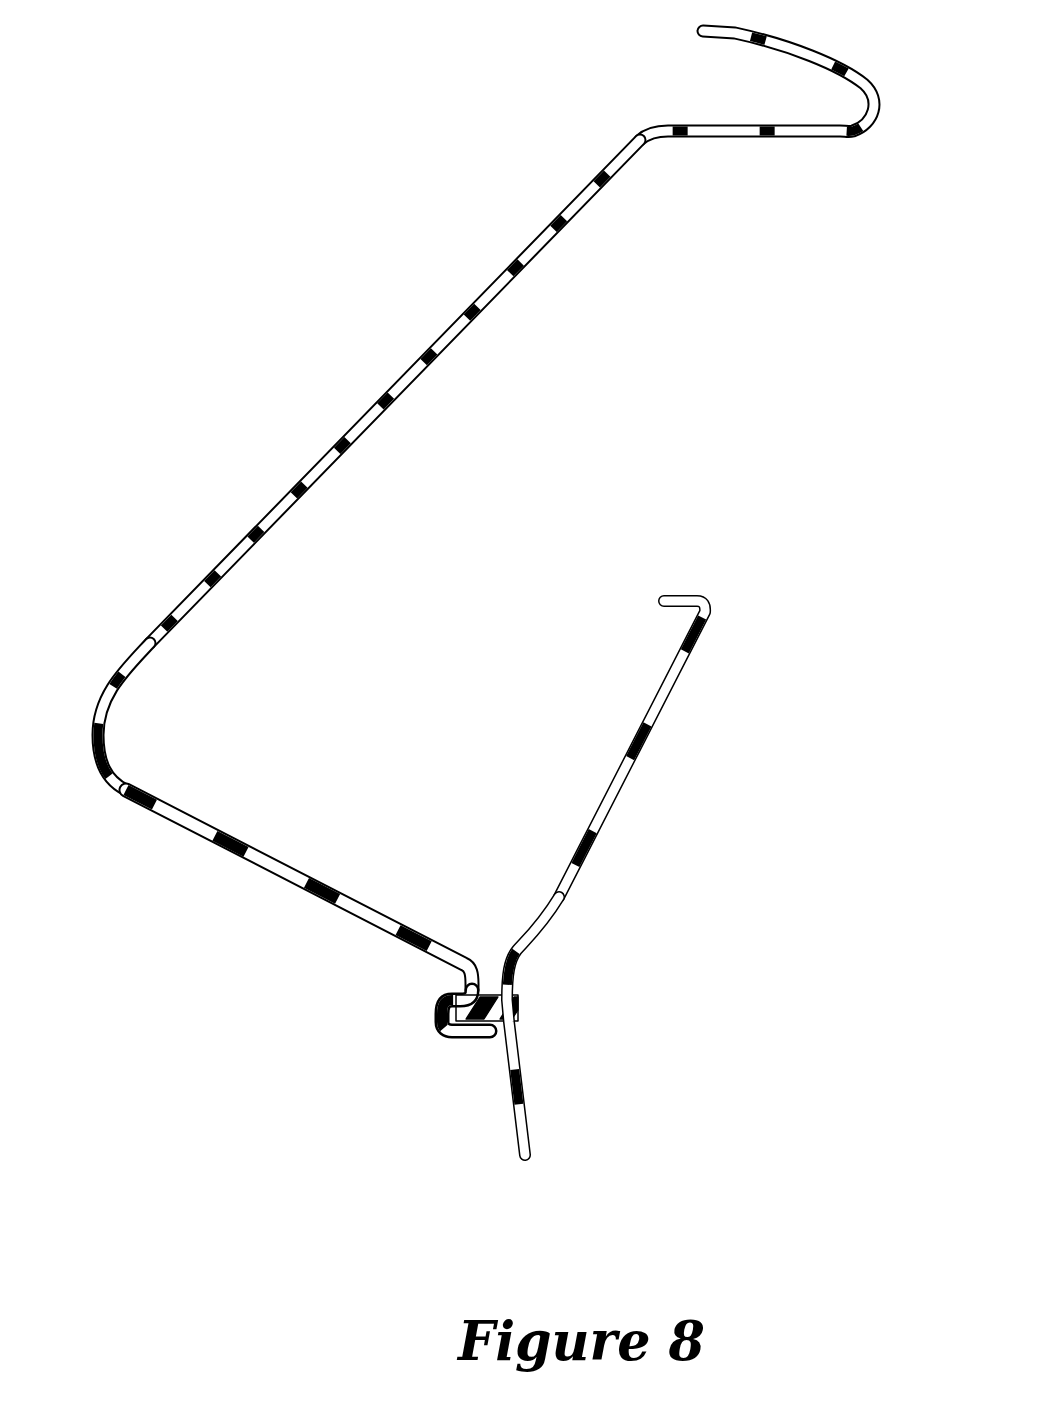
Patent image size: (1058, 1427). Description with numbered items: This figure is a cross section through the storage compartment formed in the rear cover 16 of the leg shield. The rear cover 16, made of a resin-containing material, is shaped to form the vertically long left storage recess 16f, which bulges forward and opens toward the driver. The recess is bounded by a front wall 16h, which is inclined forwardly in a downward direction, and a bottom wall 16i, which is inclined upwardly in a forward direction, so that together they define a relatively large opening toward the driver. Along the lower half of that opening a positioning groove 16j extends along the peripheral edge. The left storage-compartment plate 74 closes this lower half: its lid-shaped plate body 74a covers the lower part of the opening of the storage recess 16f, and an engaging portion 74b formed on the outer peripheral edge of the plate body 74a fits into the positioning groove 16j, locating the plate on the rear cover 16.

The rear cover 16 is at (486, 535).
The left storage recess 16f is at (375, 598).
The front wall 16h is at (417, 383).
The bottom wall 16i is at (345, 905).
The positioning groove 16j is at (489, 995).
The left storage-compartment plate 74 is at (658, 878).
The plate body 74a is at (632, 770).
The engaging portion 74b is at (515, 982).